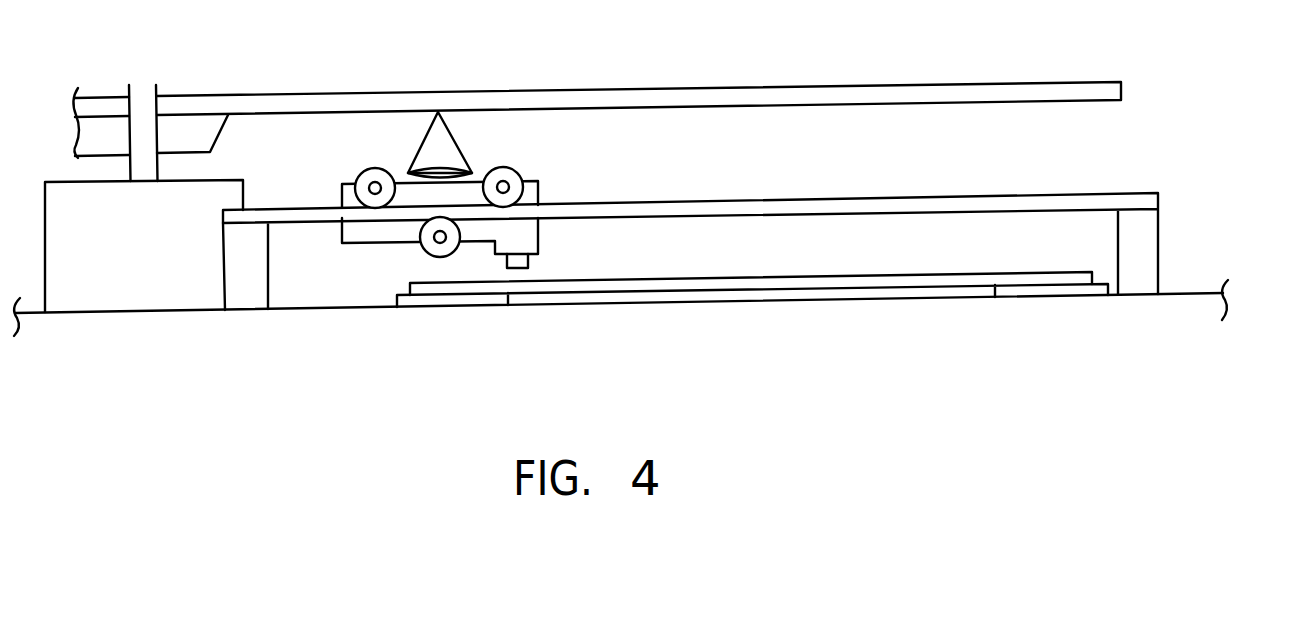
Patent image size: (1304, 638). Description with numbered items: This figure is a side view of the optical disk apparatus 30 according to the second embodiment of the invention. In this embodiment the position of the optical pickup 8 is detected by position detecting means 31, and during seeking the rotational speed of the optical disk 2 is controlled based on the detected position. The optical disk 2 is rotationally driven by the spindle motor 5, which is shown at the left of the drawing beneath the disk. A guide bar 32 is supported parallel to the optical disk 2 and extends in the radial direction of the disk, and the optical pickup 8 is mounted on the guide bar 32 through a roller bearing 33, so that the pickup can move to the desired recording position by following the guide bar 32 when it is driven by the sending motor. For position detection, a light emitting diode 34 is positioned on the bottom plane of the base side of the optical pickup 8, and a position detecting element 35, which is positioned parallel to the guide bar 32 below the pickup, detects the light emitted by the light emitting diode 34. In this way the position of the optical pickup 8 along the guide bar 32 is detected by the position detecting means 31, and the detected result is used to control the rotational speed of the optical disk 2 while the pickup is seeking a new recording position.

The optical disk 2 is at (1103, 82).
The spindle motor 5 is at (175, 292).
The optical pickup 8 is at (470, 268).
The optical disk apparatus 30 is at (761, 252).
The position detecting means 31 is at (1062, 238).
The guide bar 32 is at (918, 203).
The roller bearing 33 is at (375, 197).
The light emitting diode 34 is at (520, 260).
The position detecting element 35 is at (947, 282).